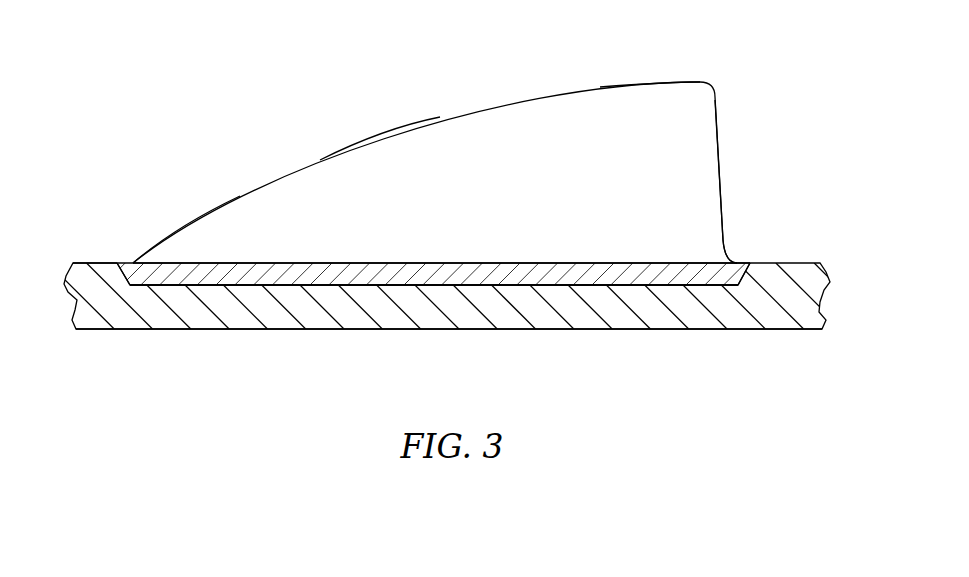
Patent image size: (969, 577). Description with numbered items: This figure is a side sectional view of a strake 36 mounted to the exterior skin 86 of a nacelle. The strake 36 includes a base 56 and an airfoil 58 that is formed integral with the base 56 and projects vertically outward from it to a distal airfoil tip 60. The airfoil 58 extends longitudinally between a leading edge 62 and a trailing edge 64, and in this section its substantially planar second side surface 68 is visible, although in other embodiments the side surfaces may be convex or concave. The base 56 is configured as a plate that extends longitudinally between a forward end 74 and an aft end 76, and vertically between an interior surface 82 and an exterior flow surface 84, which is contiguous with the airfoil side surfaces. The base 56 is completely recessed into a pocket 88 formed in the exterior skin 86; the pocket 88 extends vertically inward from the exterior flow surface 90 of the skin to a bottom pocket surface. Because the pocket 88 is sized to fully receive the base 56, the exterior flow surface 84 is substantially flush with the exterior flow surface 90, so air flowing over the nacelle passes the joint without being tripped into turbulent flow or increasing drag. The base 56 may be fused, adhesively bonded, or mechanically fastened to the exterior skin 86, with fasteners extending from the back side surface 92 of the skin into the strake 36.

The strake 36 is at (729, 108).
The base 56 is at (263, 256).
The airfoil 58 is at (721, 173).
The distal airfoil tip 60 is at (672, 81).
The leading edge 62 is at (180, 232).
The trailing edge 64 is at (723, 205).
The second side surface 68 is at (443, 155).
The forward end 74 is at (107, 289).
The aft end 76 is at (757, 267).
The interior surface 82 is at (487, 286).
The exterior flow surface 84 is at (488, 262).
The exterior skin 86 is at (807, 259).
The pocket 88 is at (153, 292).
The exterior flow surface 90 is at (97, 263).
The back side surface 92 is at (653, 330).